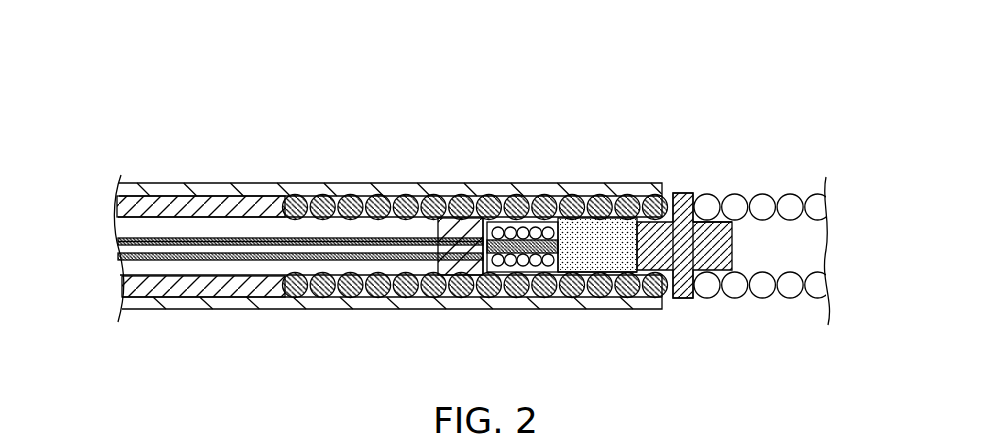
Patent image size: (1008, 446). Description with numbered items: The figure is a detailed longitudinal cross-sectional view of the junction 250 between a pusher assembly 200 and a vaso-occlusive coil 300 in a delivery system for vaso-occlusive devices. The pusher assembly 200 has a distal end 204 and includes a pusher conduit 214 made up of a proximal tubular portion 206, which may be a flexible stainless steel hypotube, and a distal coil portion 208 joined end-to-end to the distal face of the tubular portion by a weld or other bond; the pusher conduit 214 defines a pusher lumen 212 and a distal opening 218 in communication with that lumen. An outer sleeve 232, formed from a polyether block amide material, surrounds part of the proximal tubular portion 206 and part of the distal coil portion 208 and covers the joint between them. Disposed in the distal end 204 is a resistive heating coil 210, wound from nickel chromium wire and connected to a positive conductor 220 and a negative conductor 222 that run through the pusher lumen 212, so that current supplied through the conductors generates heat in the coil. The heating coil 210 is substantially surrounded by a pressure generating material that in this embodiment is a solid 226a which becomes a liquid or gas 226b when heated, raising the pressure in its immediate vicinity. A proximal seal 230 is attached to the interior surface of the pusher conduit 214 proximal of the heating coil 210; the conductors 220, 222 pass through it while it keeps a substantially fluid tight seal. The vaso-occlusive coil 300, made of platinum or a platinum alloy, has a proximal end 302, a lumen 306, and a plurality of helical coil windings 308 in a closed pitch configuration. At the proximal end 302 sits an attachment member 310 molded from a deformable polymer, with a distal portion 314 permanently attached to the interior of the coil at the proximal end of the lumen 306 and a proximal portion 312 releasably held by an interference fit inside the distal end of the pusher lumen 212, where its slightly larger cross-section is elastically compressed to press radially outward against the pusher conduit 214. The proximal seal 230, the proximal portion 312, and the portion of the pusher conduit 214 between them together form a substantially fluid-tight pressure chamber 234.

The pusher assembly 200 is at (110, 90).
The distal end 204 is at (407, 150).
The proximal tubular portion 206 is at (137, 183).
The distal coil portion 208 is at (598, 200).
The resistive heating coil 210 is at (487, 224).
The pusher lumen 212 is at (208, 235).
The pusher conduit 214 is at (104, 185).
The distal opening 218 is at (667, 190).
The positive conductor 220 is at (246, 240).
The negative conductor 222 is at (245, 252).
The solid pressure generating material 226a is at (527, 268).
The liquid or gas pressure generating material 226b is at (622, 258).
The proximal seal 230 is at (465, 268).
The outer sleeve 232 is at (304, 190).
The pressure chamber 234 is at (581, 268).
The junction 250 is at (716, 107).
The vaso-occlusive coil 300 is at (808, 62).
The proximal end 302 is at (796, 152).
The lumen 306 is at (797, 253).
The coil windings 308 is at (822, 283).
The attachment member 310 is at (684, 265).
The proximal portion 312 is at (653, 268).
The distal portion 314 is at (708, 258).